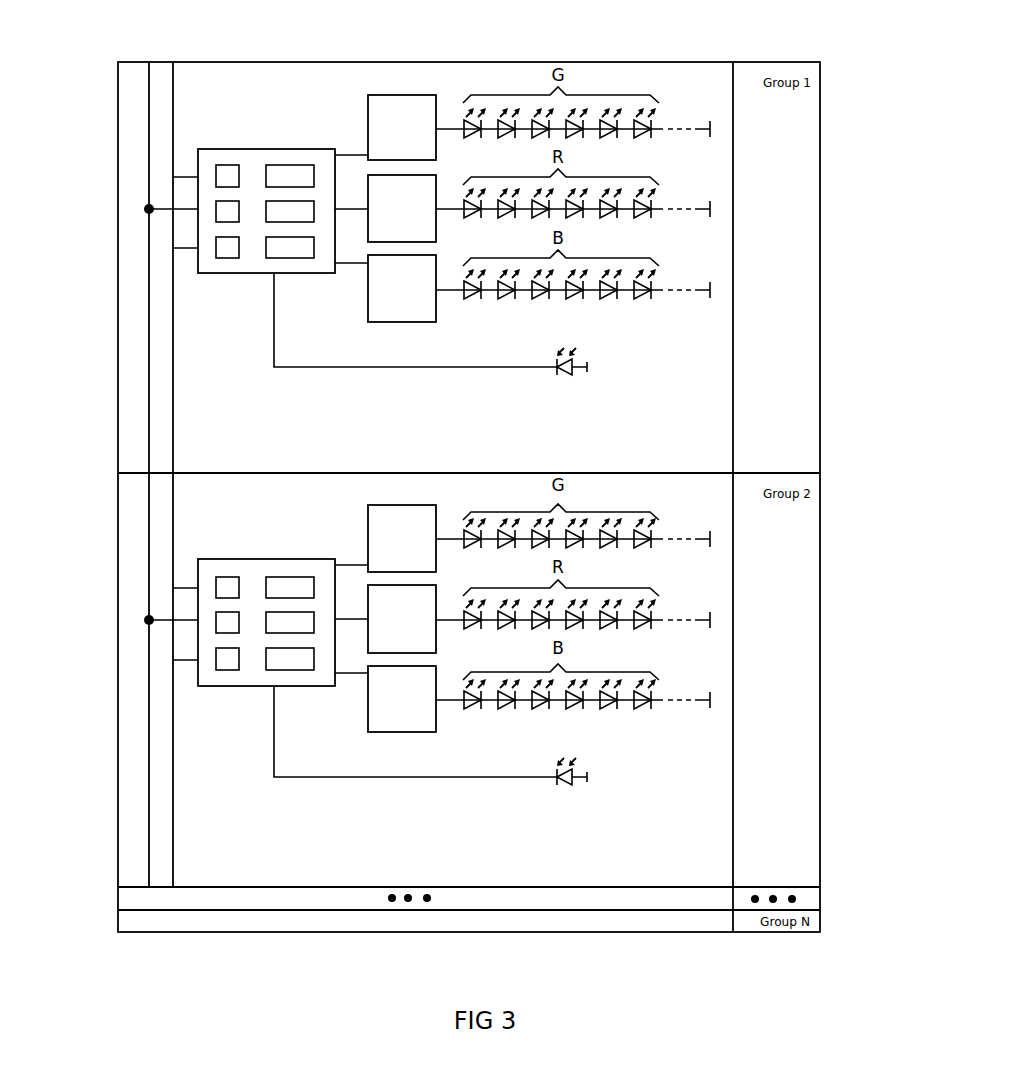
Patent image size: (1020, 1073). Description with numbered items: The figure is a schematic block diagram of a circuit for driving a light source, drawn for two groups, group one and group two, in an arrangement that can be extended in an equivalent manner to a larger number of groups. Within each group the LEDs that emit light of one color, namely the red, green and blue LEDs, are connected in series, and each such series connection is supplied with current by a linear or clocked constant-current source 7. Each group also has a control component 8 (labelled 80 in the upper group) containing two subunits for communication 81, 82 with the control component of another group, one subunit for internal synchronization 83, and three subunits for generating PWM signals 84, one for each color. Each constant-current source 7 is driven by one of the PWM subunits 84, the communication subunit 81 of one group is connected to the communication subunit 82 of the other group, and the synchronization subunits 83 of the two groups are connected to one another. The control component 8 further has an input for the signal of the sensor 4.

The sensor 4 is at (590, 815).
The constant-current source 7 is at (402, 413).
The control component 8 is at (227, 559).
The control unit 80 is at (215, 148).
The subunit for communication 81 is at (228, 588).
The subunit for communication 82 is at (228, 662).
The subunit for internal synchronization 83 is at (228, 623).
The subunit for generating PWM signals 84 is at (277, 662).